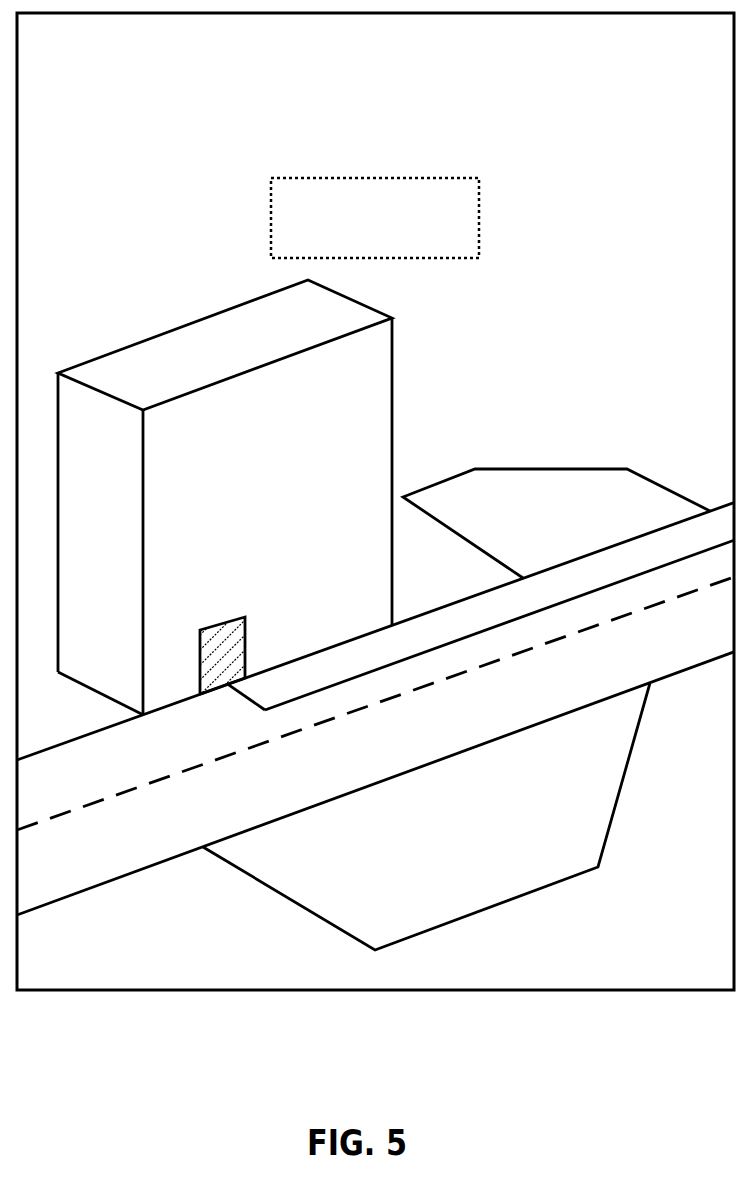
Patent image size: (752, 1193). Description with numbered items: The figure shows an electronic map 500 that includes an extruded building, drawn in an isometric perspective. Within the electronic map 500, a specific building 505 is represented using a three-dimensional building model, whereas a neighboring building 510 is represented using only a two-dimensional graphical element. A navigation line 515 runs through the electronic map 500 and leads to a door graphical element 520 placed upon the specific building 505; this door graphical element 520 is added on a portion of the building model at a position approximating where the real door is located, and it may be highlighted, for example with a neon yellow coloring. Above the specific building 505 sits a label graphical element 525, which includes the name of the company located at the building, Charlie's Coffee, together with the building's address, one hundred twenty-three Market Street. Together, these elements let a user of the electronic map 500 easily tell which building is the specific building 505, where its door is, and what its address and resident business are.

The electronic map 500 is at (118, 86).
The specific building 505 is at (228, 335).
The neighboring building 510 is at (608, 497).
The navigation line 515 is at (362, 673).
The door graphical element 520 is at (223, 635).
The label graphical element 525 is at (368, 178).